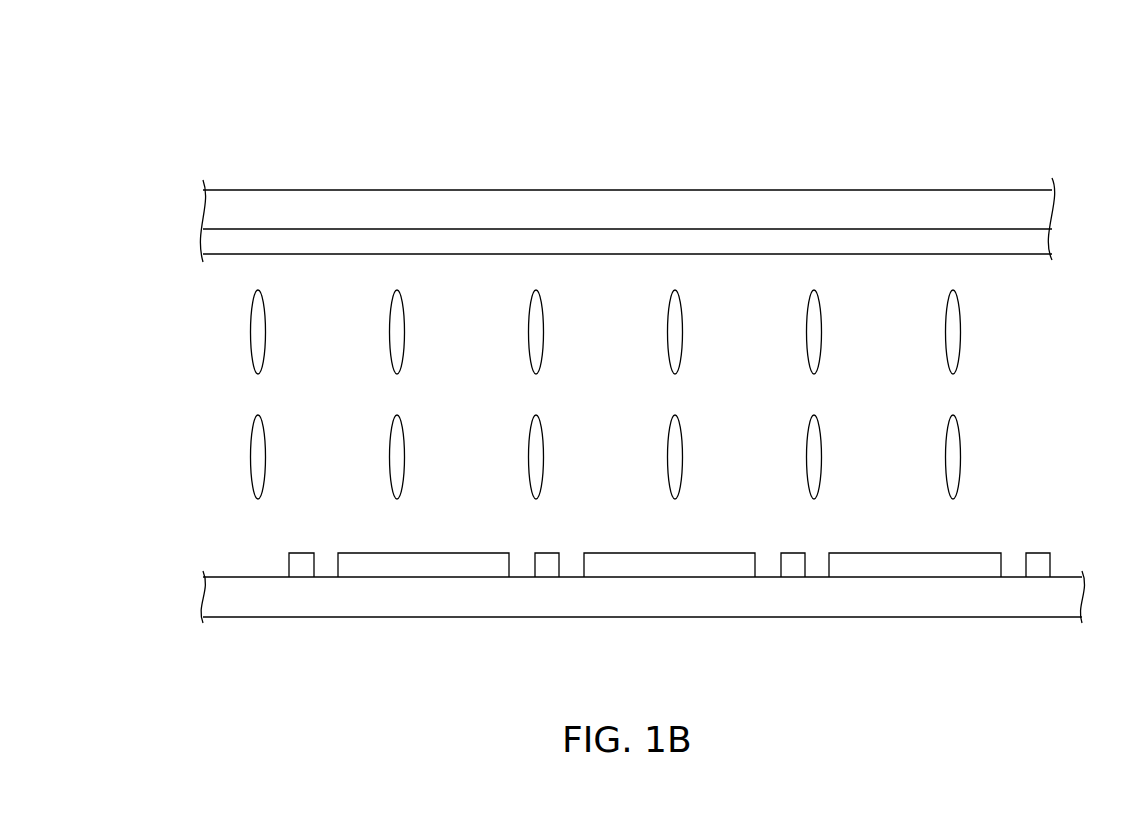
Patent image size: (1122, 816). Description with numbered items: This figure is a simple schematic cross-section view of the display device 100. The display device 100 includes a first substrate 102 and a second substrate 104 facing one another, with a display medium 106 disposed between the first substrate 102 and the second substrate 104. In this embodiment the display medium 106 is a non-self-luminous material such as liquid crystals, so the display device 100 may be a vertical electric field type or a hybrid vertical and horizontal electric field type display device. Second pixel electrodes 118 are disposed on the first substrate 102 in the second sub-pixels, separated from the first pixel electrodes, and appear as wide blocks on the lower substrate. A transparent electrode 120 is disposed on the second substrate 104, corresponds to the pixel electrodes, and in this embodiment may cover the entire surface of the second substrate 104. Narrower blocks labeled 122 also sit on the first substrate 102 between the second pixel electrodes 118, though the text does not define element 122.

The display device 100 is at (218, 93).
The first substrate 102 is at (237, 605).
The second substrate 104 is at (965, 202).
The display medium 106 is at (258, 333).
The second pixel electrode 118 is at (425, 569).
The transparent electrode 120 is at (809, 238).
The spacers 122 is at (302, 570).